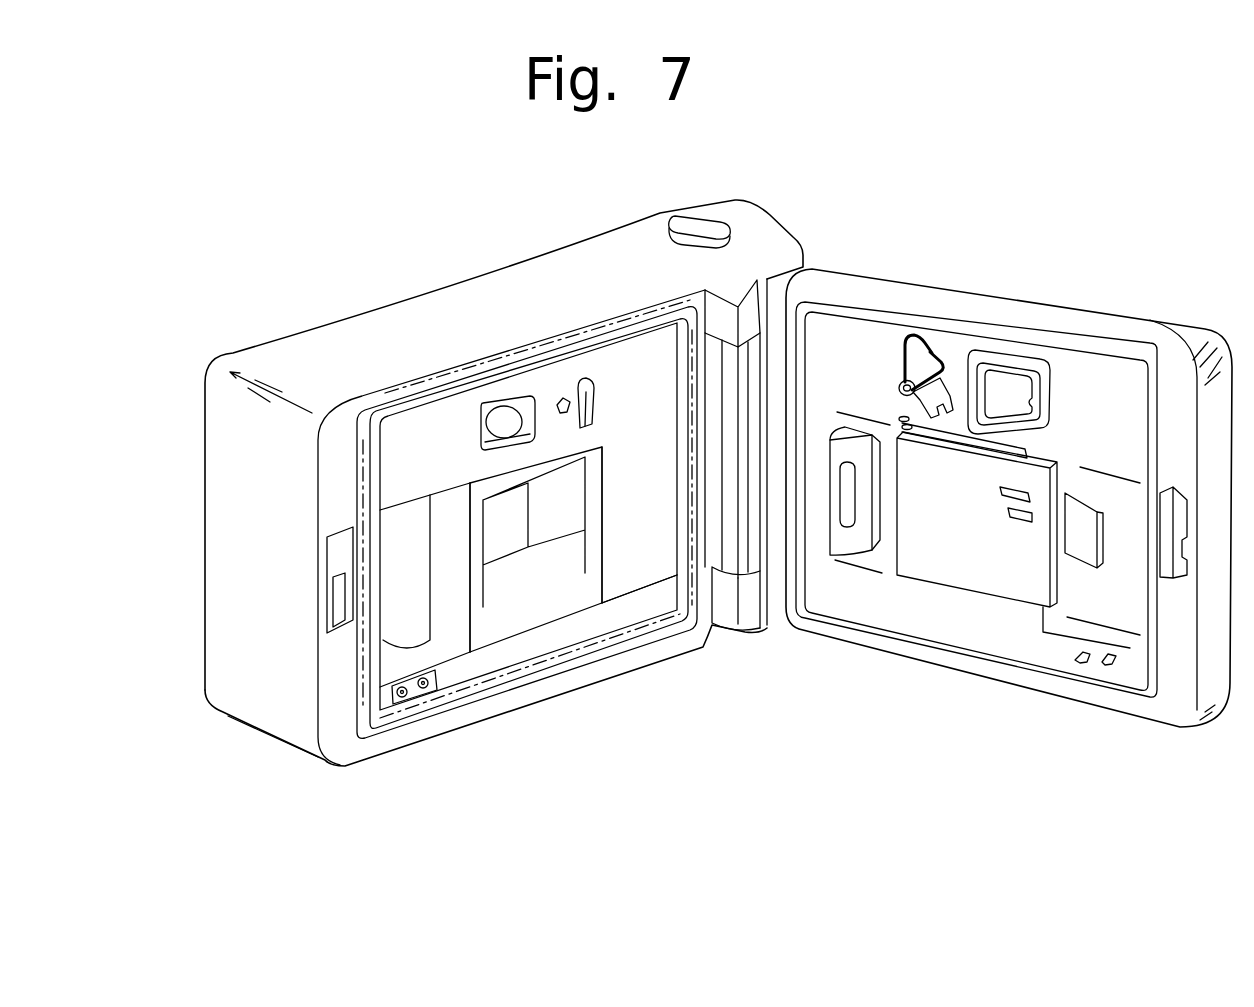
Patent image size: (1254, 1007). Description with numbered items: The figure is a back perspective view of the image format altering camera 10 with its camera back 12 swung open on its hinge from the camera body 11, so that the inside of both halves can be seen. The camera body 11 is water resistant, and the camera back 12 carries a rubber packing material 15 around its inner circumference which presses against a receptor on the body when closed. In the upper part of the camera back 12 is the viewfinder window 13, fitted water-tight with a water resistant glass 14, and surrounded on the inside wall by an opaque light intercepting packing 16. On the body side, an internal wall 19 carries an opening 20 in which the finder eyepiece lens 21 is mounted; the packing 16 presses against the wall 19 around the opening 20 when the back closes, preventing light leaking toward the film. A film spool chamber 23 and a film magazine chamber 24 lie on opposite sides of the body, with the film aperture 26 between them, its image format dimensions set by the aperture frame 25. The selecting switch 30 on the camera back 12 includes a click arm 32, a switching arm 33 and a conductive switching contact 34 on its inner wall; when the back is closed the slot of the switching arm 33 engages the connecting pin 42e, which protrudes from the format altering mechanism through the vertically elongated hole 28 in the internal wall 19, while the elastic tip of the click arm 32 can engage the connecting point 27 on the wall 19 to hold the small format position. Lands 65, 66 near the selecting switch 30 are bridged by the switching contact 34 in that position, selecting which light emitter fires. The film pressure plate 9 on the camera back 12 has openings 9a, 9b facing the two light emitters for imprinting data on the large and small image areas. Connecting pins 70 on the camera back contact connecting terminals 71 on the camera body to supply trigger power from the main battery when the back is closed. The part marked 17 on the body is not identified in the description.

The image format altering camera 10 is at (845, 172).
The camera body 11 is at (260, 700).
The camera back 12 is at (1153, 334).
The viewfinder window 13 is at (1107, 327).
The water resistant glass 14 is at (1033, 402).
The rubber packing material 15 is at (877, 637).
The light intercepting packing 16 is at (1022, 380).
The body rim 17 is at (457, 713).
The internal wall 19 is at (410, 433).
The opening 20 is at (517, 402).
The finder eyepiece lens 21 is at (503, 419).
The film spool chamber 23 is at (442, 650).
The film magazine chamber 24 is at (627, 560).
The aperture frame 25 is at (473, 607).
The film aperture 26 is at (528, 573).
The connecting point 27 is at (567, 397).
The vertically elongated hole 28 is at (593, 353).
The selecting switch 30 is at (937, 378).
The click arm 32 is at (933, 345).
The switching arm 33 is at (945, 392).
The switching contact 34 is at (980, 353).
The connecting pin 42e is at (597, 380).
The land 65 is at (908, 338).
The land 66 is at (897, 418).
The connecting pins 70 is at (1107, 662).
The connecting terminals 71 is at (421, 689).
The film pressure plate 9 is at (1027, 593).
The opening 9a is at (1003, 495).
The opening 9b is at (1012, 515).